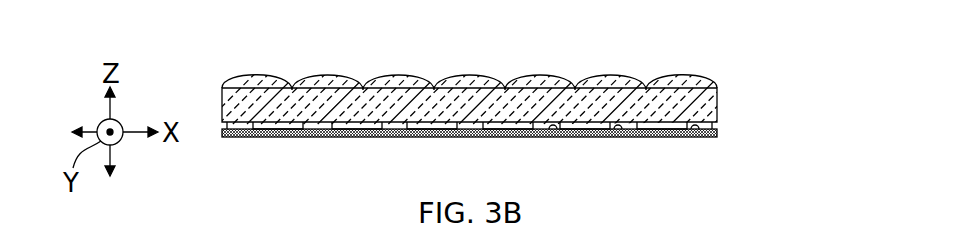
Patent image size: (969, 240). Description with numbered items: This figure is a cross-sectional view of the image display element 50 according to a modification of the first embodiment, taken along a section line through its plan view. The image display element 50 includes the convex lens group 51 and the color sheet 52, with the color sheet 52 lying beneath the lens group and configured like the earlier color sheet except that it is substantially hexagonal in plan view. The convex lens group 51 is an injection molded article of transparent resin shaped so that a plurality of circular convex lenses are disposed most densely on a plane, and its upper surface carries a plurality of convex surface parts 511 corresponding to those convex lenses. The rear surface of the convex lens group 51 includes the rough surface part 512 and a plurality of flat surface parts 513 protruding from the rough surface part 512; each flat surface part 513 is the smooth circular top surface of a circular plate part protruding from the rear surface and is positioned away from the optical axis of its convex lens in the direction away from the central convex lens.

The image display element 50 is at (750, 63).
The convex lens group 51 is at (717, 97).
The convex surface parts 511 is at (387, 75).
The rough surface part 512 is at (413, 129).
The flat surface parts 513 is at (697, 125).
The color sheet 52 is at (717, 133).